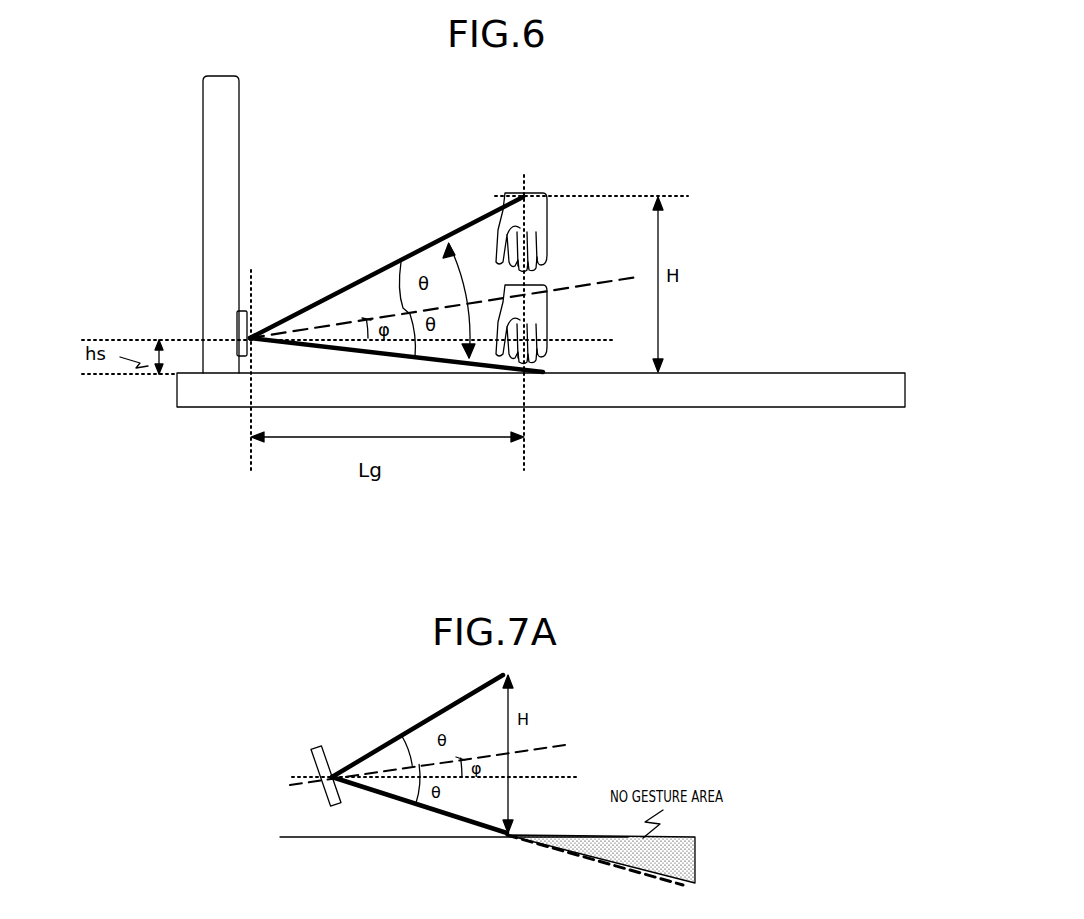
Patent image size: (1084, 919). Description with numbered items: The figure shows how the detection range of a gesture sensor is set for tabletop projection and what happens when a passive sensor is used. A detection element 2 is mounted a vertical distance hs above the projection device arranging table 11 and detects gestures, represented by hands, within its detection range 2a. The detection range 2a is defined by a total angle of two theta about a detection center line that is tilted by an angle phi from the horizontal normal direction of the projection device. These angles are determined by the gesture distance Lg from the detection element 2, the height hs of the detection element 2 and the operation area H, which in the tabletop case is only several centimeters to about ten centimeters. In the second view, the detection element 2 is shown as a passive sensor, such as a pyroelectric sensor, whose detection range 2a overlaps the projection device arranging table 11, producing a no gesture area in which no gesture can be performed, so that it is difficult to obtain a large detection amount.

In FIG. 6, the detection element 2 is at (238, 326).
In FIG. 7A, the detection element 2 is at (312, 757).
In FIG. 6, the detection range 2a is at (434, 246).
In FIG. 7A, the projection device arranging table 11 is at (328, 838).